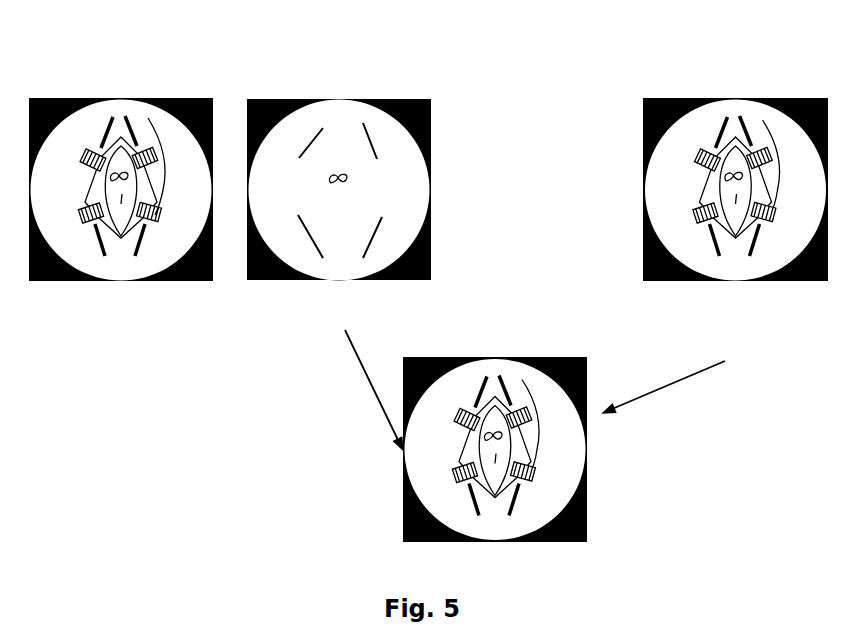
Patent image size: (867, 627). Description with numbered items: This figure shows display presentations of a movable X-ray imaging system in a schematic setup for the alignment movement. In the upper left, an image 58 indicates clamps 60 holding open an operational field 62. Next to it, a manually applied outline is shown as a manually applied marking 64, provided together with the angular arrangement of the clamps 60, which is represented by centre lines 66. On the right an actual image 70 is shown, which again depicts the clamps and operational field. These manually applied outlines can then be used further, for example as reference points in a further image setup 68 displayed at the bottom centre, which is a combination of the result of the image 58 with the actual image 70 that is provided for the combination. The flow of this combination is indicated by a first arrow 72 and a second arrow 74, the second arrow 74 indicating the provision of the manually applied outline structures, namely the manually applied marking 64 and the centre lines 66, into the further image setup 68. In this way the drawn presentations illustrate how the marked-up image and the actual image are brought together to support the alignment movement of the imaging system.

The image 58 is at (117, 107).
The clamps 60 is at (147, 125).
The operational field 62 is at (118, 207).
The manually applied marking 64 is at (352, 172).
The centre lines 66 is at (370, 147).
The further image setup 68 is at (493, 372).
The actual image 70 is at (727, 108).
The first arrow 72 is at (642, 398).
The second arrow 74 is at (365, 373).